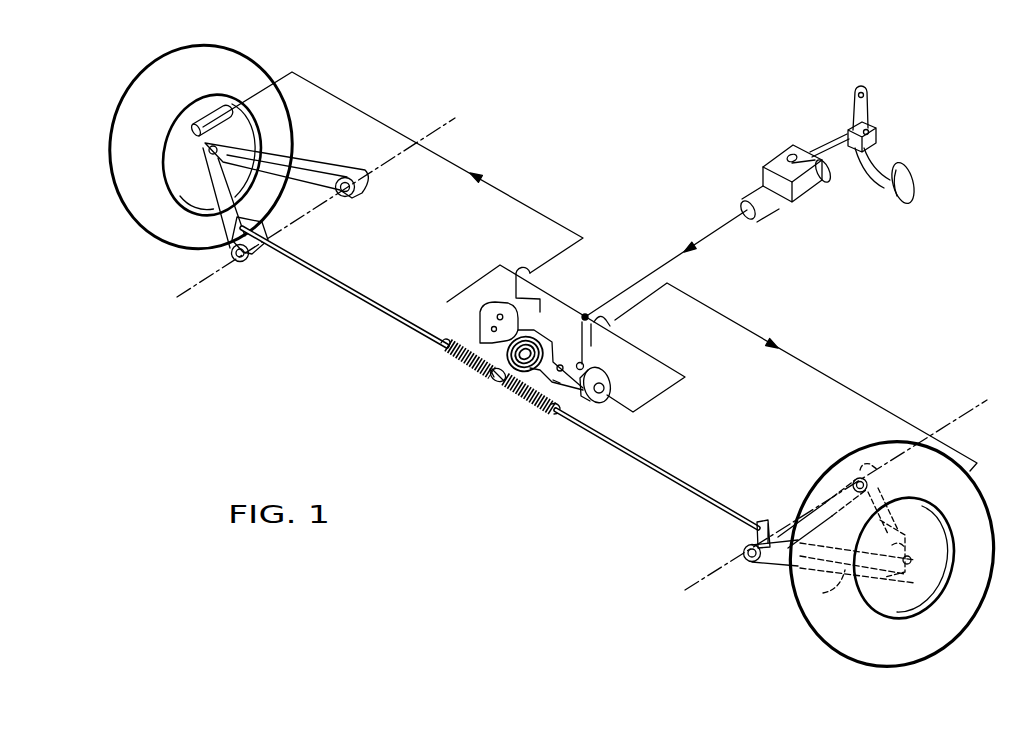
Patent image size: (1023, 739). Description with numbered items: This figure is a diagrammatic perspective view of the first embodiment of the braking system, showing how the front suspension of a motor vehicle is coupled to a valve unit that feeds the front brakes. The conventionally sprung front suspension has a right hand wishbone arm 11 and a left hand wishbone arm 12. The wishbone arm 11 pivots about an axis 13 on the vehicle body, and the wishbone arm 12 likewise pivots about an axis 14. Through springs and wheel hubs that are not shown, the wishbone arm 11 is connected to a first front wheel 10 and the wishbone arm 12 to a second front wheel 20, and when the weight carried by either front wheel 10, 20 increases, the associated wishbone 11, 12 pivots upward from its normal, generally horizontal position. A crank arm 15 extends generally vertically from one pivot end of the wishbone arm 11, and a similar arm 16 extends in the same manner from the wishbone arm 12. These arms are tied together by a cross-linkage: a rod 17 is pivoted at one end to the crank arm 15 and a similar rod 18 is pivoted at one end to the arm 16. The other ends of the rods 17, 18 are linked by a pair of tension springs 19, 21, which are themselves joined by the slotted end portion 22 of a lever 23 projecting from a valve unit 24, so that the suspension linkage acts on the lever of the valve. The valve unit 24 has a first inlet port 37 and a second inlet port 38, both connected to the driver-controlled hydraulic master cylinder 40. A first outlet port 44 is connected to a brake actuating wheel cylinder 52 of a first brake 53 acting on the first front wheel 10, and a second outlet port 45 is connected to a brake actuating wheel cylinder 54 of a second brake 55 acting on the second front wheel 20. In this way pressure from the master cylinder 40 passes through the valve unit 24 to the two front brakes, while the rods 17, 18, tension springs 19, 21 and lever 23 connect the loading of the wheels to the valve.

The first front wheel 10 is at (132, 112).
The brake actuating wheel cylinder 52 is at (208, 116).
The first brake 53 is at (176, 174).
The right hand wishbone arm 11 is at (297, 166).
The axis 13 is at (418, 135).
The crank arm 15 is at (226, 256).
The rod 17 is at (324, 268).
The tension spring 19 is at (450, 370).
The slotted end portion 22 is at (488, 382).
The tension spring 21 is at (526, 404).
The rod 18 is at (653, 464).
The valve unit 24 is at (602, 367).
The first inlet port 37 is at (482, 316).
The lever 23 is at (537, 338).
The first outlet port 44 is at (500, 316).
The second outlet port 45 is at (590, 362).
The second inlet port 38 is at (612, 388).
The axis 14 is at (958, 413).
The hydraulic master cylinder 40 is at (763, 180).
The brake actuating wheel cylinder 54 is at (982, 590).
The second brake 55 is at (878, 605).
The left hand wishbone arm 12 is at (790, 605).
The arm 16 is at (769, 524).
The second front wheel 20 is at (822, 506).